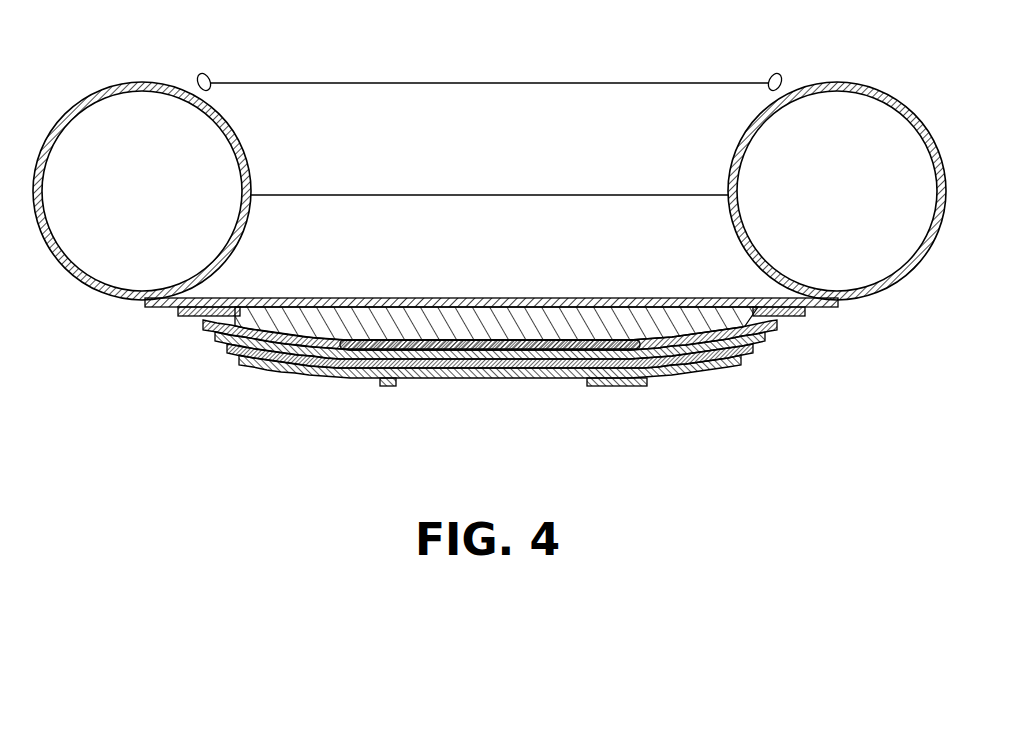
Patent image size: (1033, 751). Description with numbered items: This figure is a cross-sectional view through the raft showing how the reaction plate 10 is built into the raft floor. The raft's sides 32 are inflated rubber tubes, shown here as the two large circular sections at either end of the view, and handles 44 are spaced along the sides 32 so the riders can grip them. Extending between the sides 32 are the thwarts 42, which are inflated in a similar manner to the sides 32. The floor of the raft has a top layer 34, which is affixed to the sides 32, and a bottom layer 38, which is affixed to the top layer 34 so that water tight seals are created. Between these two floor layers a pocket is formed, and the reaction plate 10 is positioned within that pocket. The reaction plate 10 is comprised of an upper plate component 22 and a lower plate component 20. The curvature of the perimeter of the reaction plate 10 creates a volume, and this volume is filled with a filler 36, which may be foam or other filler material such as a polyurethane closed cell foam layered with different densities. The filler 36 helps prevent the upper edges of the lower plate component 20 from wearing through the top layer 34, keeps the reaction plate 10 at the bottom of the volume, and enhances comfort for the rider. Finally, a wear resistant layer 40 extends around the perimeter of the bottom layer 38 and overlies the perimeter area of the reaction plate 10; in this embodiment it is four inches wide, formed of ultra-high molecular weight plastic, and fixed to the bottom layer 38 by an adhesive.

The reaction plate 10 is at (491, 333).
The lower plate component 20 is at (498, 362).
The upper plate component 22 is at (545, 350).
The sides 32 is at (144, 82).
The top layer 34 is at (440, 300).
The filler 36 is at (385, 318).
The bottom layer 38 is at (430, 378).
The wear resistant layer 40 is at (248, 360).
The thwarts 42 is at (475, 194).
The handles 44 is at (208, 75).